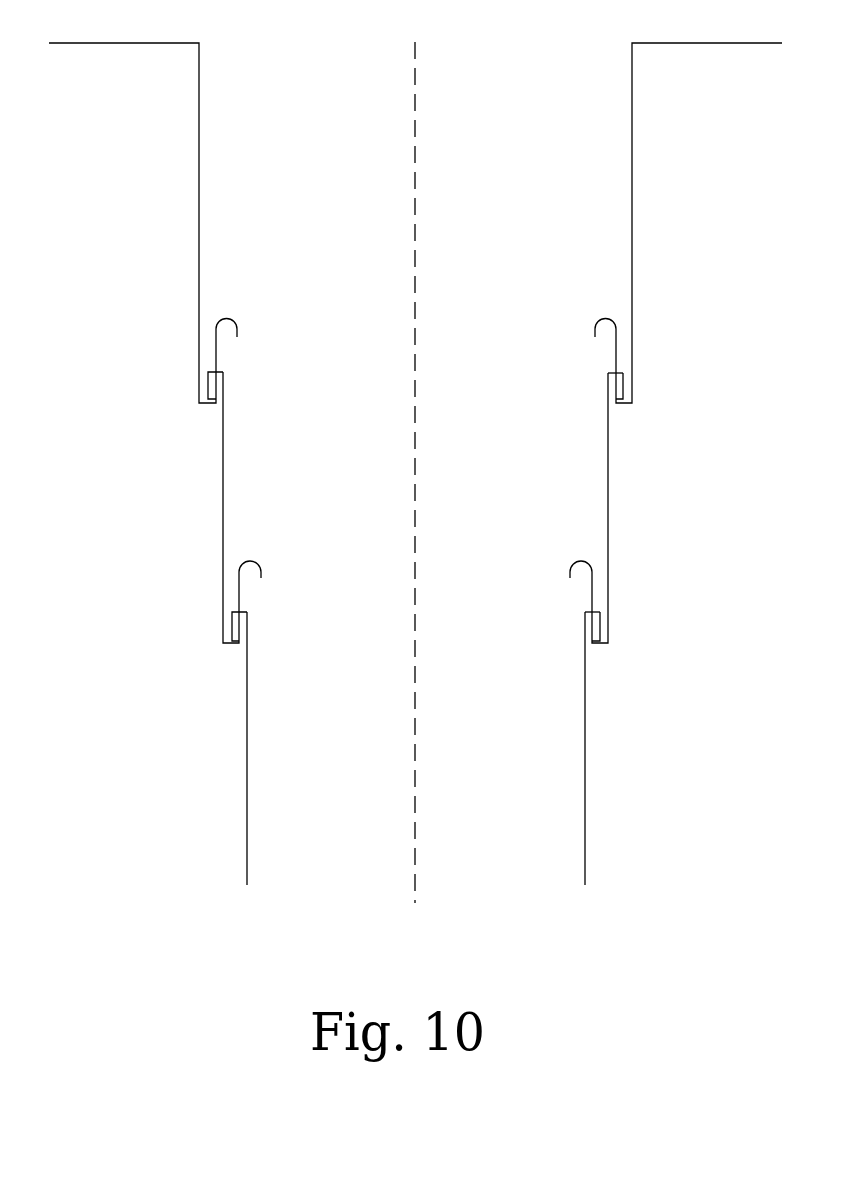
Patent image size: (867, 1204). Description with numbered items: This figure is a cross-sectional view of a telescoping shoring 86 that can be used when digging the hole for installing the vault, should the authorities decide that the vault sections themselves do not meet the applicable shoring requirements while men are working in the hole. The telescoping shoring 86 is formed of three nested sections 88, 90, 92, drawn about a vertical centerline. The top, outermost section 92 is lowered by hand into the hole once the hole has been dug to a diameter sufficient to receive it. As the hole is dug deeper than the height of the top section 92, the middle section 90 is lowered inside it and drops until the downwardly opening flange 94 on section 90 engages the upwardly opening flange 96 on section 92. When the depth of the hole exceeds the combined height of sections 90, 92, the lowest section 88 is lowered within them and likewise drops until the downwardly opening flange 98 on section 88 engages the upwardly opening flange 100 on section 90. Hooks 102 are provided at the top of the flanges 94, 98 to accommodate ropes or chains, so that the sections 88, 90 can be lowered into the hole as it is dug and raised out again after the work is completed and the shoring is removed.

The telescoping shoring 86 is at (637, 523).
The section 88 is at (618, 783).
The section 90 is at (609, 562).
The section 92 is at (632, 206).
The downwardly opening flange 94 is at (615, 373).
The upwardly opening flange 96 is at (622, 405).
The downwardly opening flange 98 is at (590, 612).
The upwardly opening flange 100 is at (598, 645).
The hooks 102 is at (230, 302).